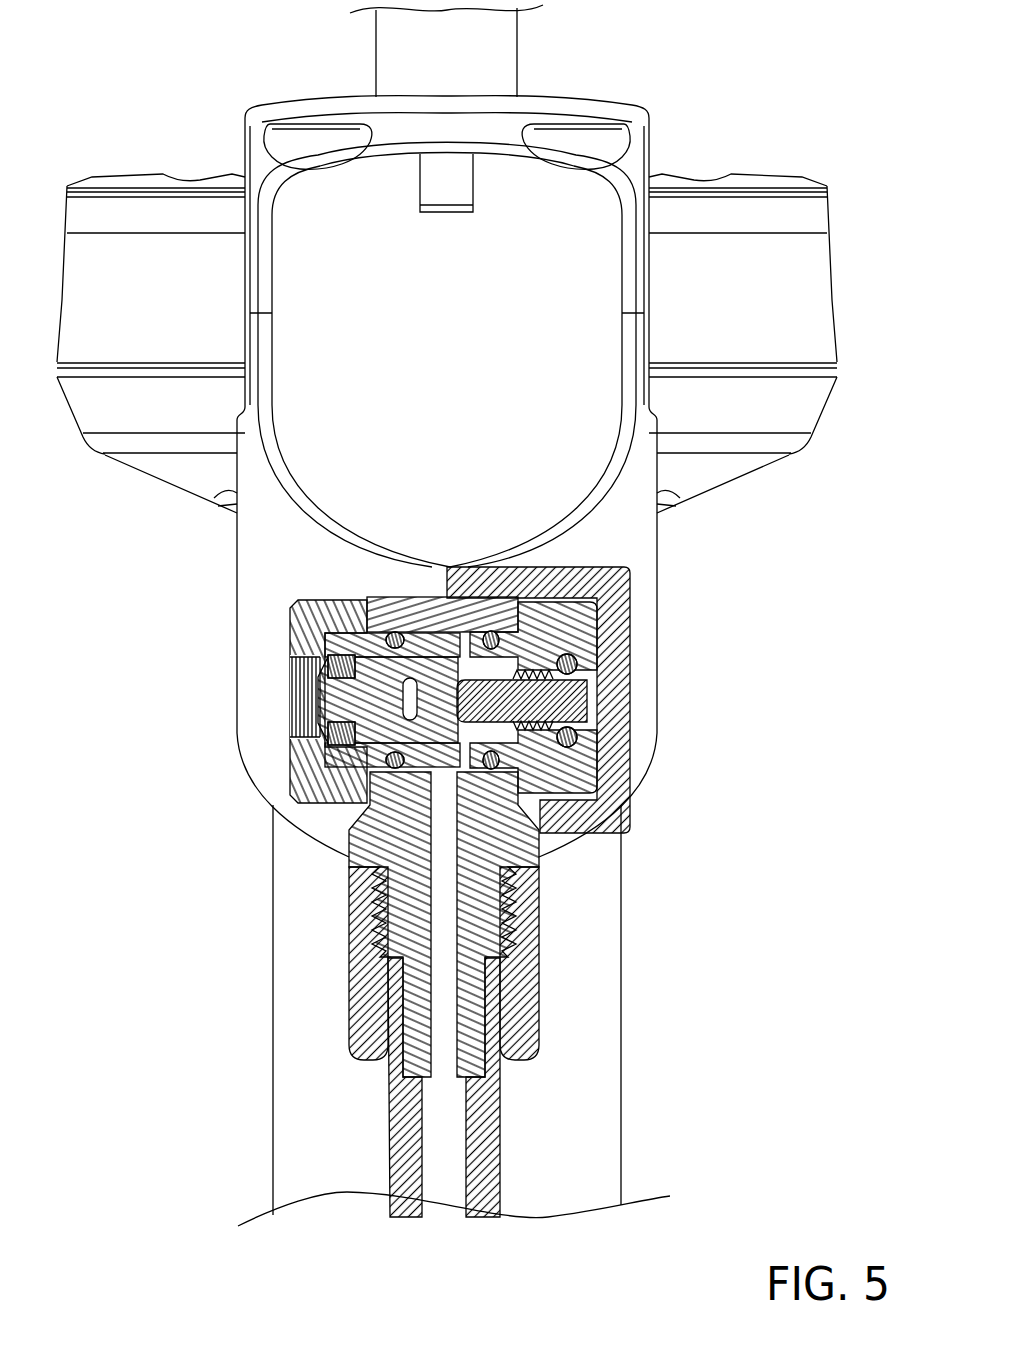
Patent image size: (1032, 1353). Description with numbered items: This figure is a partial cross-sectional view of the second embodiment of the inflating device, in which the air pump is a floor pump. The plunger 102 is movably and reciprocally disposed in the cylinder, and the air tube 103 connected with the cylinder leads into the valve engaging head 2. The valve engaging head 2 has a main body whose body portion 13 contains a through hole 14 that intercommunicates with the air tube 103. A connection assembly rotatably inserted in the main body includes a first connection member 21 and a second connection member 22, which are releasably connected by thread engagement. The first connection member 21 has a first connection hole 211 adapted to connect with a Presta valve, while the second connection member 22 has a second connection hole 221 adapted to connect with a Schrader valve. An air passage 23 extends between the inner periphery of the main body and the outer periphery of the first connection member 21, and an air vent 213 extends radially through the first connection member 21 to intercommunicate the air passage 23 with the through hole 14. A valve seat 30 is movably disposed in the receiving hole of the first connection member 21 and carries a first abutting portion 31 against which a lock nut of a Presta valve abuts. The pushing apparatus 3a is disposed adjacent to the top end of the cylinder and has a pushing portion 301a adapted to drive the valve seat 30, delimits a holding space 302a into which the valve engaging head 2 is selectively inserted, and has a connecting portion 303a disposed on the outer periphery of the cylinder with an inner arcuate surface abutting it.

The plunger 102 is at (480, 55).
The air tube 103 is at (484, 1111).
The body portion 13 is at (387, 917).
The through hole 14 is at (470, 1030).
The valve engaging head 2 is at (463, 708).
The first connection member 21 is at (578, 618).
The first connection hole 211 is at (560, 710).
The air vent 213 is at (470, 768).
The second connection member 22 is at (307, 630).
The second connection hole 221 is at (302, 676).
The air passage 23 is at (422, 624).
The valve seat 30 is at (372, 747).
The pushing portion 301a is at (517, 700).
The holding space 302a is at (573, 783).
The connecting portion 303a is at (579, 666).
The first abutting portion 31 is at (470, 684).
The pushing apparatus 3a is at (636, 572).